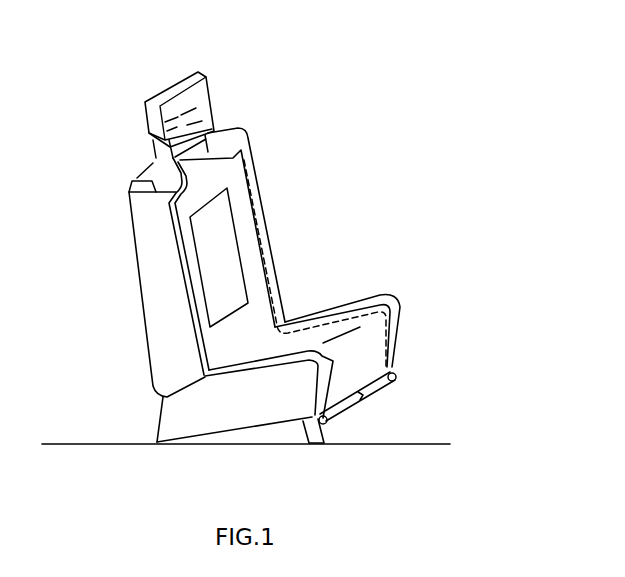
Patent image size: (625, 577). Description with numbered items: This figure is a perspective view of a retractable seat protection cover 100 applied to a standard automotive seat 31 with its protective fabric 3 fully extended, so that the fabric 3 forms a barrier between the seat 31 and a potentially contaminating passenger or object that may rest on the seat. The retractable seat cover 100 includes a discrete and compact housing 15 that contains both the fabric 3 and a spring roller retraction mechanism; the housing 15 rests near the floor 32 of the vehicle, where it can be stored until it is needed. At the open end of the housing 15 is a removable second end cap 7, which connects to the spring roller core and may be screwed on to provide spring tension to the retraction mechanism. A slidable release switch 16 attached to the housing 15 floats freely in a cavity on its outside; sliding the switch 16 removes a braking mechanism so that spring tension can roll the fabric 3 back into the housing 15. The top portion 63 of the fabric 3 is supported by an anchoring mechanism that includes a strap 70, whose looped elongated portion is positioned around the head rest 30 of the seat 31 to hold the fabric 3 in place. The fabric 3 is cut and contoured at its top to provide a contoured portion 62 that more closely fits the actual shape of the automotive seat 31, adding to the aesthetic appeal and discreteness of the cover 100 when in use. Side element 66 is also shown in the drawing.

The retractable seat protection cover 100 is at (404, 117).
The head rest 30 is at (199, 83).
The strap 70 is at (148, 152).
The contoured portion 62 is at (129, 193).
The automotive seat 31 is at (150, 308).
The top portion of the fabric 63 is at (248, 162).
The second end cap 7 is at (222, 265).
The protective fabric 3 is at (250, 322).
The side frame 66 is at (380, 342).
The housing 15 is at (391, 384).
The slidable release switch 16 is at (360, 402).
The floor 32 is at (376, 451).